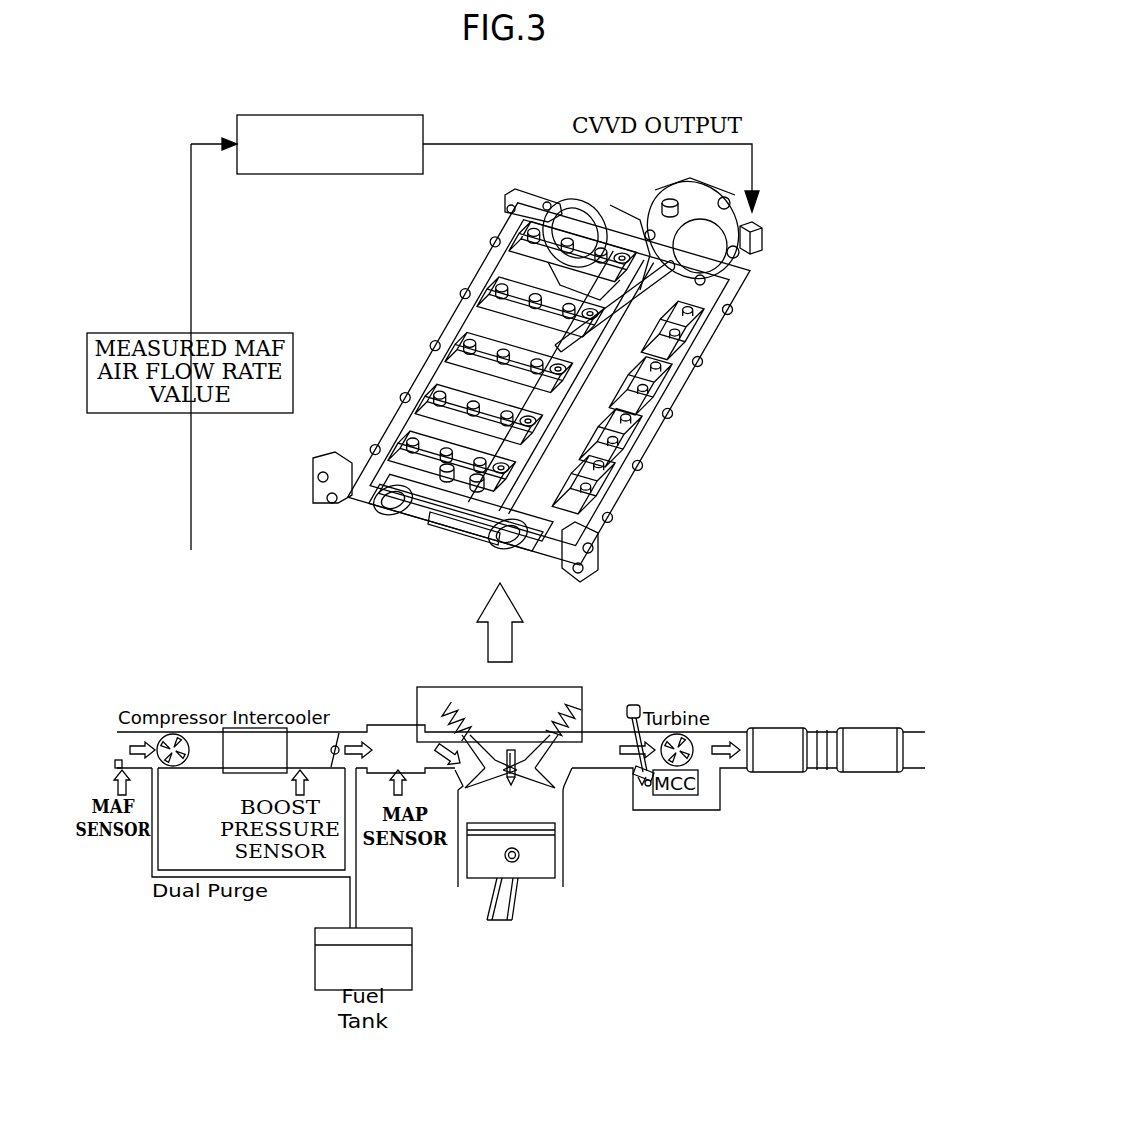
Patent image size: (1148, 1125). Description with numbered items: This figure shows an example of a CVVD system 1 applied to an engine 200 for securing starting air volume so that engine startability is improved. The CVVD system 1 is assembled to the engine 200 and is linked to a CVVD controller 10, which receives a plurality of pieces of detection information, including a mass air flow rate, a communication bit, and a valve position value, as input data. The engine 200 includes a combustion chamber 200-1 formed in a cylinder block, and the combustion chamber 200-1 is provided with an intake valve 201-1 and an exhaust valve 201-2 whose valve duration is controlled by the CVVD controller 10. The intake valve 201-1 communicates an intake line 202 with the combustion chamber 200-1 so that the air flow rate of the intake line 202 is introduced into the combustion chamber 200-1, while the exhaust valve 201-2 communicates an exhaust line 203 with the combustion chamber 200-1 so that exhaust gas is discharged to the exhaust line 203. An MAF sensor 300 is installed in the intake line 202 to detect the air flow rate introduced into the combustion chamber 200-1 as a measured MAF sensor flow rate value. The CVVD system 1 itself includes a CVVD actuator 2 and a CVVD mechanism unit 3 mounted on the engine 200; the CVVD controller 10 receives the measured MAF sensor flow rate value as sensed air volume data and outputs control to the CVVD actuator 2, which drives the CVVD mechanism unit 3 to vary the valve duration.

The CVVD system 1 is at (789, 218).
The CVVD actuator 2 is at (740, 254).
The CVVD mechanism unit 3 is at (682, 344).
The CVVD controller 10 is at (352, 174).
The engine 200 is at (582, 530).
The combustion chamber 200-1 is at (548, 808).
The intake valve 201-1 is at (452, 708).
The exhaust valve 201-2 is at (572, 706).
The intake line 202 is at (348, 728).
The exhaust line 203 is at (727, 732).
The MAF sensor 300 is at (117, 760).